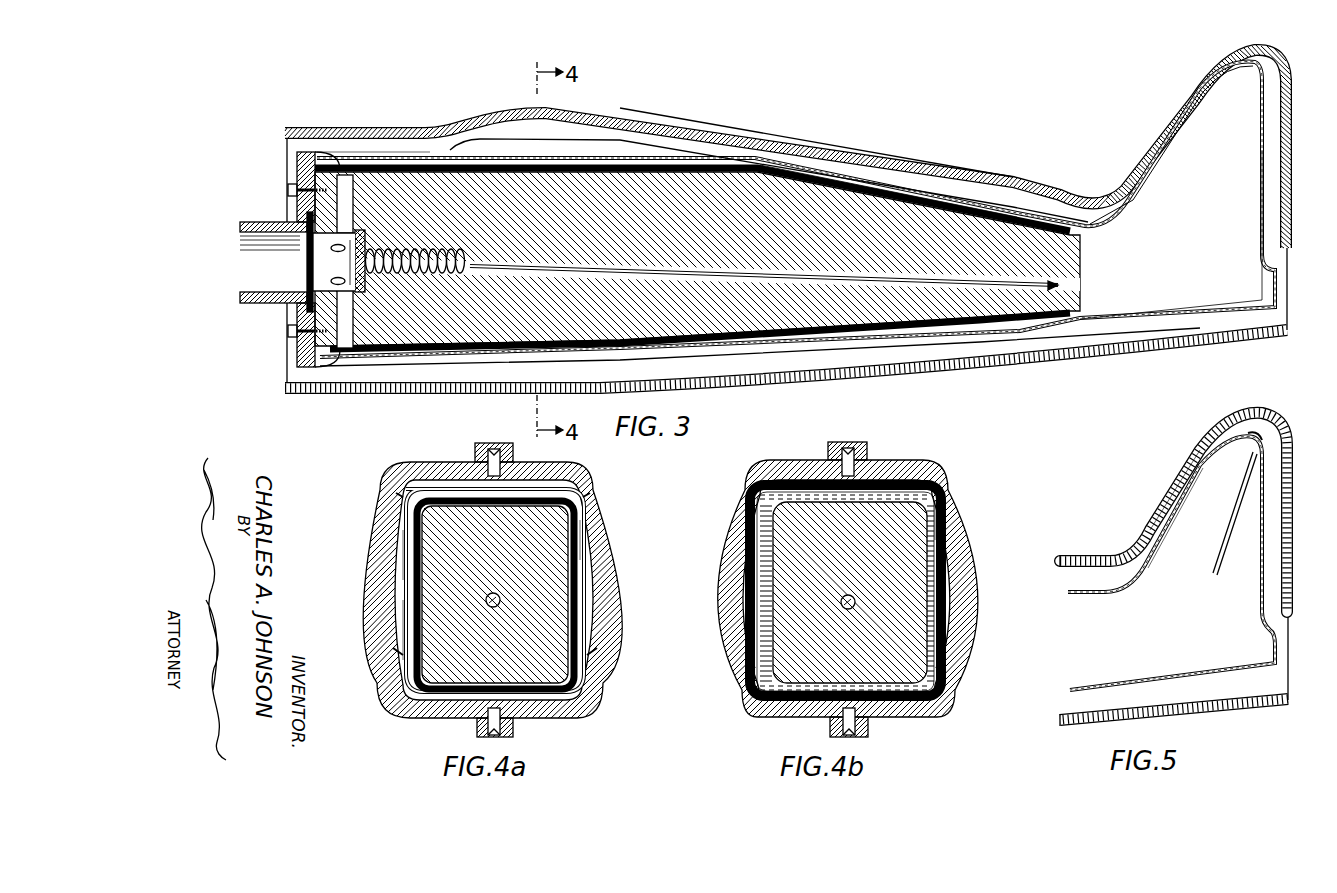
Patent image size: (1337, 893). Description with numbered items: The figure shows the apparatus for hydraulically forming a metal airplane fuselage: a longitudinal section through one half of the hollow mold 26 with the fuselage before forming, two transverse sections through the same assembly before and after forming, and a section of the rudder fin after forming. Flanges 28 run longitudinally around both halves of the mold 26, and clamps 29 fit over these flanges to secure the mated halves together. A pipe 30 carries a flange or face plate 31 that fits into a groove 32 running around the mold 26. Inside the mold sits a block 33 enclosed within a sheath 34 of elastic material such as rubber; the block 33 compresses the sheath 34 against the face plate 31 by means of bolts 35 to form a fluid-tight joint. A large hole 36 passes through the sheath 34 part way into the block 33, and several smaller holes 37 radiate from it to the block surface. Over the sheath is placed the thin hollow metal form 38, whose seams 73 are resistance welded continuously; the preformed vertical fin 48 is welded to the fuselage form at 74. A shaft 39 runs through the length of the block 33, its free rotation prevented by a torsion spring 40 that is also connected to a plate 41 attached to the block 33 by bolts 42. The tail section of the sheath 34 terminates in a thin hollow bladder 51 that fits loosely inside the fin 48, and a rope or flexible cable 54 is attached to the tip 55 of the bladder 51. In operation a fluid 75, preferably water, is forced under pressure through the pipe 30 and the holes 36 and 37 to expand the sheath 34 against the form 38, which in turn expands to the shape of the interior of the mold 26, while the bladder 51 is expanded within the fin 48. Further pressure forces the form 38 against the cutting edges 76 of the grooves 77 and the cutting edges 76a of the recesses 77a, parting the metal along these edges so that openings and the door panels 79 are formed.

In FIG. 3, the hollow mold 26 is at (290, 173).
In FIG. 4A, the hollow mold 26 is at (382, 508).
In FIG. 4B, the hollow mold 26 is at (740, 543).
In FIG. 3, the flanges 28 is at (933, 177).
In FIG. 4A, the flanges 28 is at (475, 452).
In FIG. 4B, the flanges 28 is at (828, 455).
In FIG. 5, the flanges 28 is at (1160, 547).
In FIG. 3, the clamps 29 is at (797, 130).
In FIG. 4A, the clamps 29 is at (494, 442).
In FIG. 4B, the clamps 29 is at (830, 728).
In FIG. 5, the clamps 29 is at (1228, 412).
In FIG. 3, the pipe 30 is at (250, 250).
In FIG. 3, the face plate 31 is at (307, 209).
In FIG. 3, the groove 32 is at (297, 150).
In FIG. 3, the block 33 is at (607, 193).
In FIG. 4A, the block 33 is at (547, 593).
In FIG. 4B, the block 33 is at (907, 622).
In FIG. 3, the sheath 34 is at (883, 187).
In FIG. 3, the bolts 35 is at (288, 190).
In FIG. 3, the large hole 36 is at (328, 278).
In FIG. 3, the smaller holes 37 is at (340, 163).
In FIG. 3, the hollow metal form 38 is at (1007, 207).
In FIG. 4A, the hollow metal form 38 is at (583, 530).
In FIG. 4B, the hollow metal form 38 is at (932, 482).
In FIG. 3, the shaft 39 is at (515, 266).
In FIG. 4A, the shaft 39 is at (487, 600).
In FIG. 4B, the shaft 39 is at (857, 602).
In FIG. 3, the torsion spring 40 is at (380, 240).
In FIG. 3, the plate 41 is at (327, 263).
In FIG. 3, the bolts 42 is at (358, 173).
In FIG. 3, the vertical fin 48 is at (1193, 137).
In FIG. 5, the vertical fin 48 is at (1220, 467).
In FIG. 5, the bladder 51 is at (1202, 498).
In FIG. 5, the cable 54 is at (1220, 540).
In FIG. 5, the tip 55 is at (1250, 436).
In FIG. 3, the seams 73 is at (755, 163).
In FIG. 4A, the seams 73 is at (495, 697).
In FIG. 4B, the seams 73 is at (845, 590).
In FIG. 3, the fin weld 74 is at (1087, 222).
In FIG. 4B, the fluid 75 is at (770, 487).
In FIG. 3, the cutting edges 76 is at (457, 147).
In FIG. 4A, the cutting edges 76 is at (392, 675).
In FIG. 4B, the cutting edges 76 is at (962, 678).
In FIG. 4A, the cutting edges 76a is at (400, 495).
In FIG. 3, the grooves 77 is at (443, 148).
In FIG. 4A, the grooves 77 is at (393, 663).
In FIG. 4A, the recesses 77a is at (383, 558).
In FIG. 4B, the door panels 79 is at (745, 575).